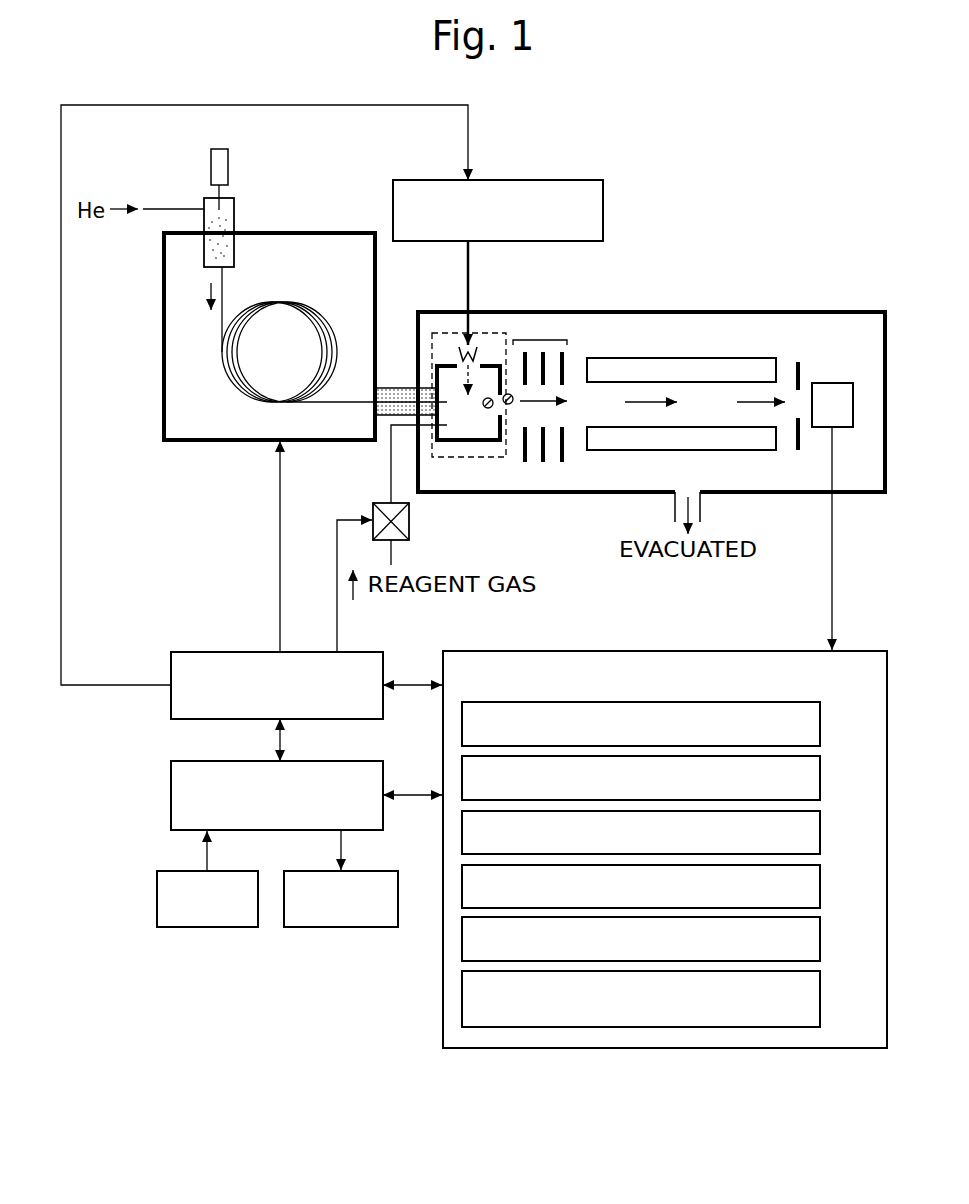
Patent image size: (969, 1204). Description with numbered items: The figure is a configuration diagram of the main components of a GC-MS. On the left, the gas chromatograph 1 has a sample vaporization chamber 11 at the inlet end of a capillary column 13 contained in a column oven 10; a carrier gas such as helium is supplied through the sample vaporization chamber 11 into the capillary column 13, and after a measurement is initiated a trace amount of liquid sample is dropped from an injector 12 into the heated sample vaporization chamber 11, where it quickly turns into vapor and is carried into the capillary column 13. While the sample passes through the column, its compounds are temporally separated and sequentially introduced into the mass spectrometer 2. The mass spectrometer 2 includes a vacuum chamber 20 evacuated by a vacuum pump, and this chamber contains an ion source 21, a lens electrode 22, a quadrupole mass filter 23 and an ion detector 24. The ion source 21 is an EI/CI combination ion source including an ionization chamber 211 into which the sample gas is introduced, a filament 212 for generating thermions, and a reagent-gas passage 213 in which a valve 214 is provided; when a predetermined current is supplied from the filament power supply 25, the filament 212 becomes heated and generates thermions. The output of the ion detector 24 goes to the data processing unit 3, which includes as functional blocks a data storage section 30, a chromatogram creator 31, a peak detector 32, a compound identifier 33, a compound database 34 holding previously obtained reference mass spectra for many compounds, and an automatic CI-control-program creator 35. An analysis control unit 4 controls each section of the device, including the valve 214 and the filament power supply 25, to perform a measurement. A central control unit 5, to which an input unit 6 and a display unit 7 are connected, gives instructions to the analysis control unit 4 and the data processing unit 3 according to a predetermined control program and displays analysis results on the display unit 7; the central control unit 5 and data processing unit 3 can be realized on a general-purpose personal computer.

The gas chromatograph 1 is at (321, 160).
The mass spectrometer 2 is at (789, 242).
The data processing unit 3 is at (703, 650).
The analysis control unit 4 is at (171, 665).
The central control unit 5 is at (170, 787).
The input unit 6 is at (197, 928).
The display unit 7 is at (336, 928).
The column oven 10 is at (333, 233).
The sample vaporization chamber 11 is at (234, 215).
The injector 12 is at (228, 163).
The capillary column 13 is at (302, 305).
The vacuum chamber 20 is at (615, 311).
The ion source 21 is at (431, 332).
The ionization chamber 211 is at (469, 441).
The filament 212 is at (461, 347).
The reagent-gas passage 213 is at (388, 470).
The valve 214 is at (372, 506).
The lens electrode 22 is at (540, 339).
The quadrupole mass filter 23 is at (726, 357).
The ion detector 24 is at (833, 382).
The filament power supply 25 is at (605, 205).
The data storage section 30 is at (821, 718).
The chromatogram creator 31 is at (821, 772).
The peak detector 32 is at (821, 827).
The compound identifier 33 is at (821, 881).
The compound database 34 is at (821, 935).
The automatic CI-control-program creator 35 is at (821, 989).